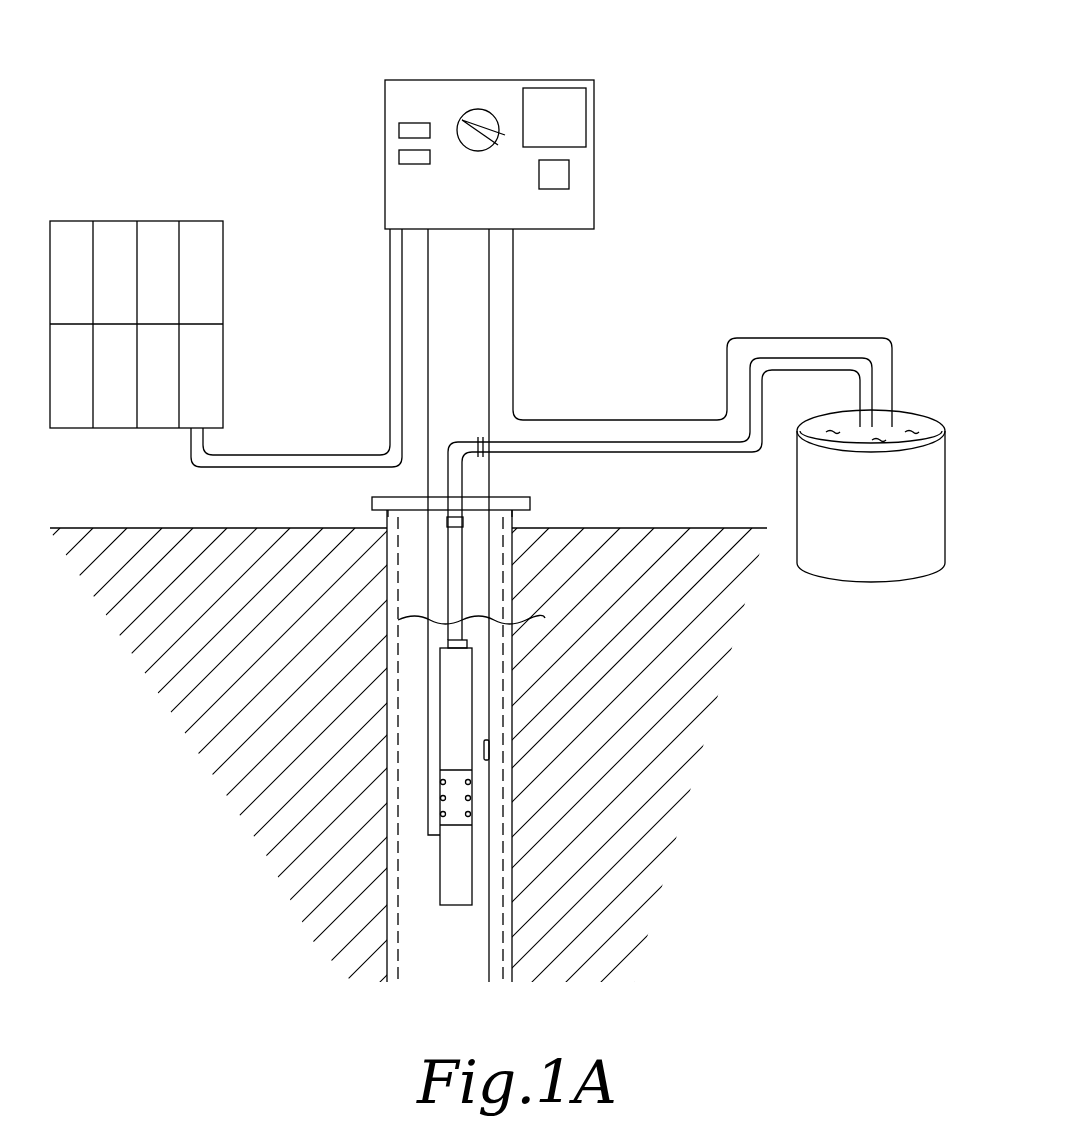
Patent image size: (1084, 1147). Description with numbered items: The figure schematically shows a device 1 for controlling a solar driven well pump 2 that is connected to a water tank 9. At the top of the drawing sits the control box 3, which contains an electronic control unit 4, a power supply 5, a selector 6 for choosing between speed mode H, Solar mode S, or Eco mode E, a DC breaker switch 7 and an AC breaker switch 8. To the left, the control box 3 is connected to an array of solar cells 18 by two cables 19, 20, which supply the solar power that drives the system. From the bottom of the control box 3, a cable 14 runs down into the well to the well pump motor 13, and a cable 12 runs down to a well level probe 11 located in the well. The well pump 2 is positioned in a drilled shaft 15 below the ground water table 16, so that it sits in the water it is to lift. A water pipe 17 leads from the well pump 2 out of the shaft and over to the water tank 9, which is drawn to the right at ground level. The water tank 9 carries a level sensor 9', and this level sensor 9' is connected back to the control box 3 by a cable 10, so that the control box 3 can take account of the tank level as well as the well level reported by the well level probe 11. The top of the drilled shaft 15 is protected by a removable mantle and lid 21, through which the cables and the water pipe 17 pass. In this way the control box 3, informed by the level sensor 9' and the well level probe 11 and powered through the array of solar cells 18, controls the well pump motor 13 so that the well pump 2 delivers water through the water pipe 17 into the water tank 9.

The device 1 is at (679, 56).
The well pump 2 is at (472, 677).
The control box 3 is at (450, 80).
The electronic control unit 4 is at (557, 177).
The power supply 5 is at (572, 125).
The selector 6 is at (475, 148).
The DC breaker switch 7 is at (400, 130).
The AC breaker switch 8 is at (410, 158).
The water tank 9 is at (830, 496).
The level sensor 9' is at (873, 382).
The cable 10 is at (826, 338).
The well level probe 11 is at (489, 748).
The cable 12 is at (489, 360).
The well pump motor 13 is at (450, 858).
The cable 14 is at (428, 305).
The drilled shaft 15 is at (507, 943).
The ground water table 16 is at (545, 618).
The water pipe 17 is at (617, 456).
The array of solar cells 18 is at (160, 252).
The cable 19 is at (390, 362).
The cable 20 is at (402, 300).
The removable mantle and lid 21 is at (404, 494).